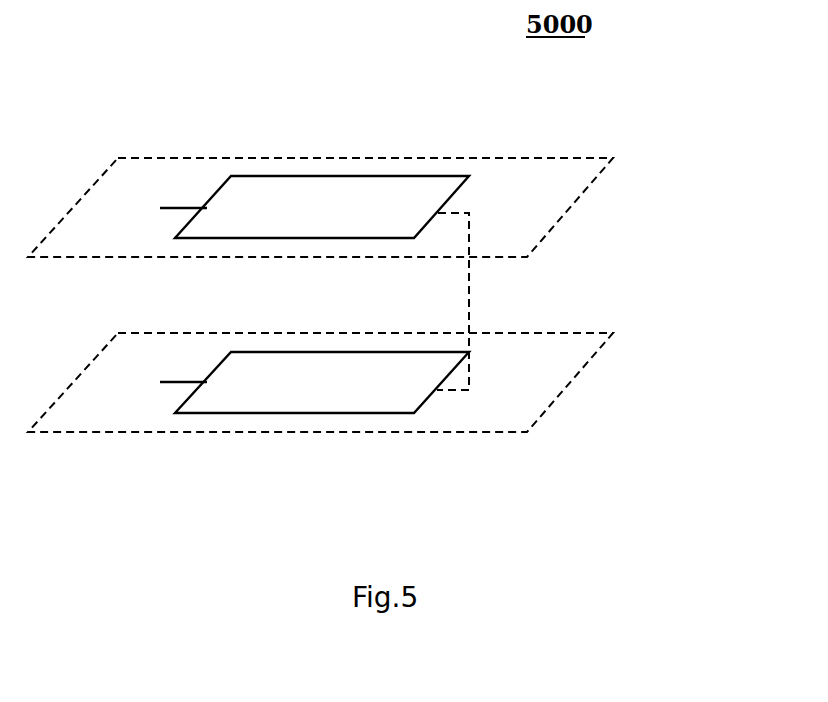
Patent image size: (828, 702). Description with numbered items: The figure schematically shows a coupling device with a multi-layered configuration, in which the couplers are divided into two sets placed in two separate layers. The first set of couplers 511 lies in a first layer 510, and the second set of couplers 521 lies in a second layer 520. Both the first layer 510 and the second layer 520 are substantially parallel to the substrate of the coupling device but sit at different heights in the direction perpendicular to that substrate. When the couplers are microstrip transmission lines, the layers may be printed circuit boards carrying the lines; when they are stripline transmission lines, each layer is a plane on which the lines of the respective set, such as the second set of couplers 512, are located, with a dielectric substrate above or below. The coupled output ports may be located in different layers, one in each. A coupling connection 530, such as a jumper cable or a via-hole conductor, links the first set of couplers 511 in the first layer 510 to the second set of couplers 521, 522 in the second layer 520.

The first layer 510 is at (573, 208).
The first set of couplers 511 is at (347, 176).
The second set of couplers 512 is at (172, 208).
The second layer 520 is at (573, 382).
The second set of couplers 521 is at (303, 413).
The second feed line 522 is at (173, 382).
The coupling connection 530 is at (470, 302).